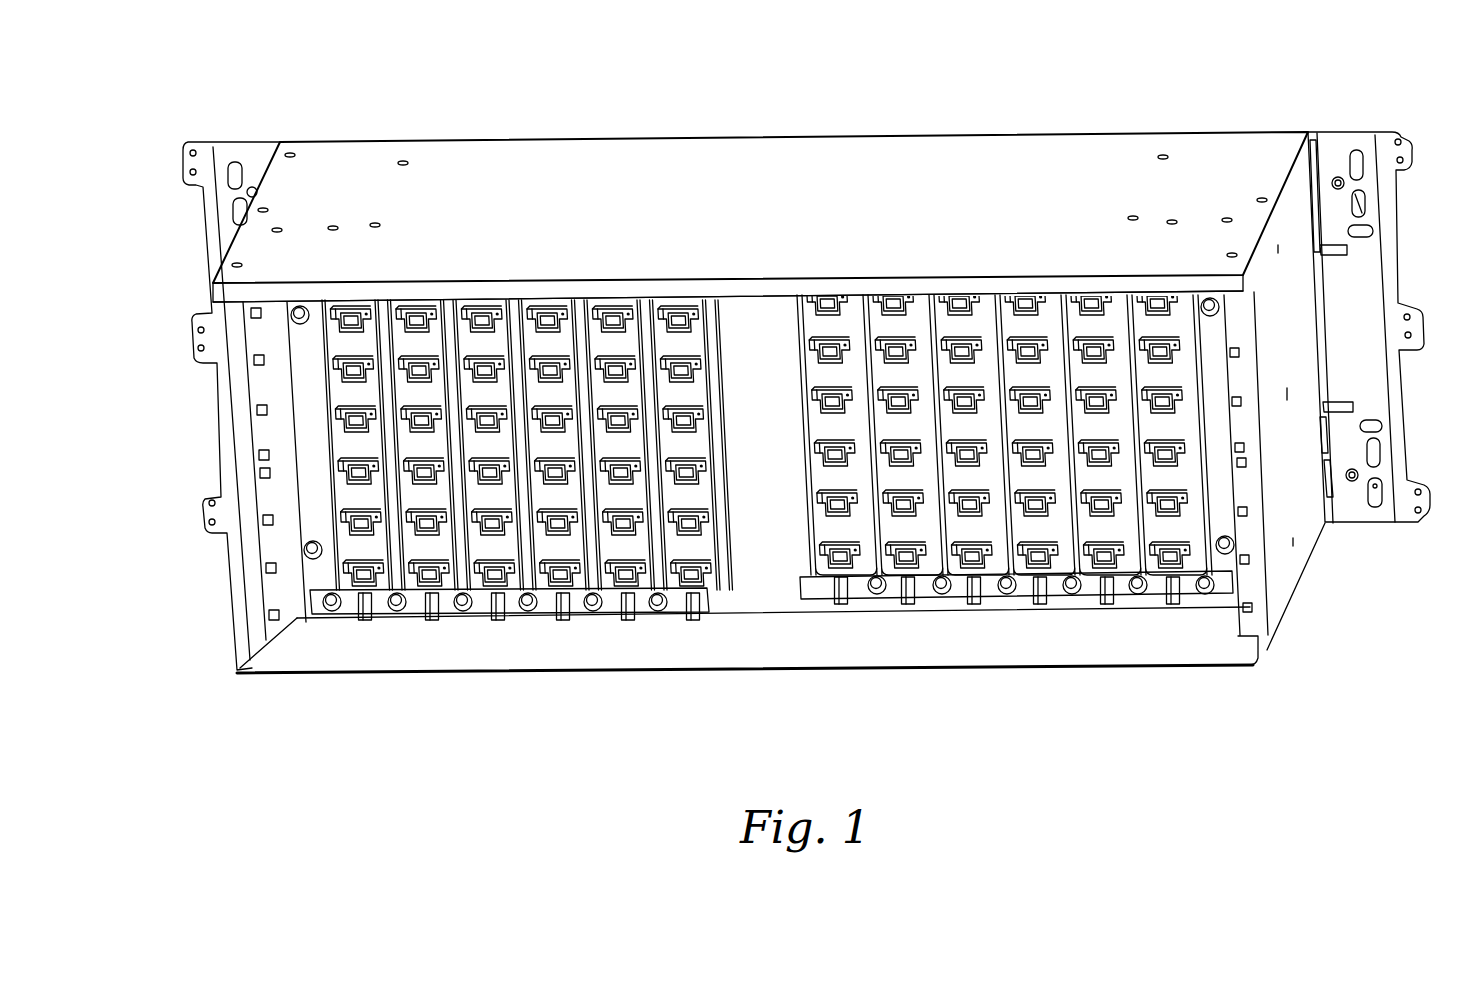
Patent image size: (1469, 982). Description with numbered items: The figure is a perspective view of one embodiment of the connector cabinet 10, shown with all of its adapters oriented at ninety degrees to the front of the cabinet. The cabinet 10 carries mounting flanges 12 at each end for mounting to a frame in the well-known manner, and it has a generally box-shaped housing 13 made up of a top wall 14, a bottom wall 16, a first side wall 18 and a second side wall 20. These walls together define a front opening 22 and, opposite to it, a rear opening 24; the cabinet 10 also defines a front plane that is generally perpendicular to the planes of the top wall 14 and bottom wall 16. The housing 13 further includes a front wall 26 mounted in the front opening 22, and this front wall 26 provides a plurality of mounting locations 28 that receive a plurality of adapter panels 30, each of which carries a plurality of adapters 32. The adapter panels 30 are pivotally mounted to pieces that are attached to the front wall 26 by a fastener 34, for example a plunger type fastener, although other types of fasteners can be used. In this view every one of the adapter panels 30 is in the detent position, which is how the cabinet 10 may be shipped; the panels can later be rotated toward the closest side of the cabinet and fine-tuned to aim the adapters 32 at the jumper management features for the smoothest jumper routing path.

The connector cabinet 10 is at (797, 404).
The mounting flanges 12 is at (233, 155).
The housing 13 is at (1218, 173).
The top wall 14 is at (1102, 157).
The bottom wall 16 is at (1161, 640).
The first side wall 18 is at (242, 402).
The second side wall 20 is at (1288, 570).
The front opening 22 is at (1023, 650).
The rear opening 24 is at (876, 126).
The front wall 26 is at (765, 323).
The mounting locations 28 is at (328, 634).
The adapter panels 30 is at (1015, 318).
The adapters 32 is at (1156, 340).
The fastener 34 is at (1138, 594).